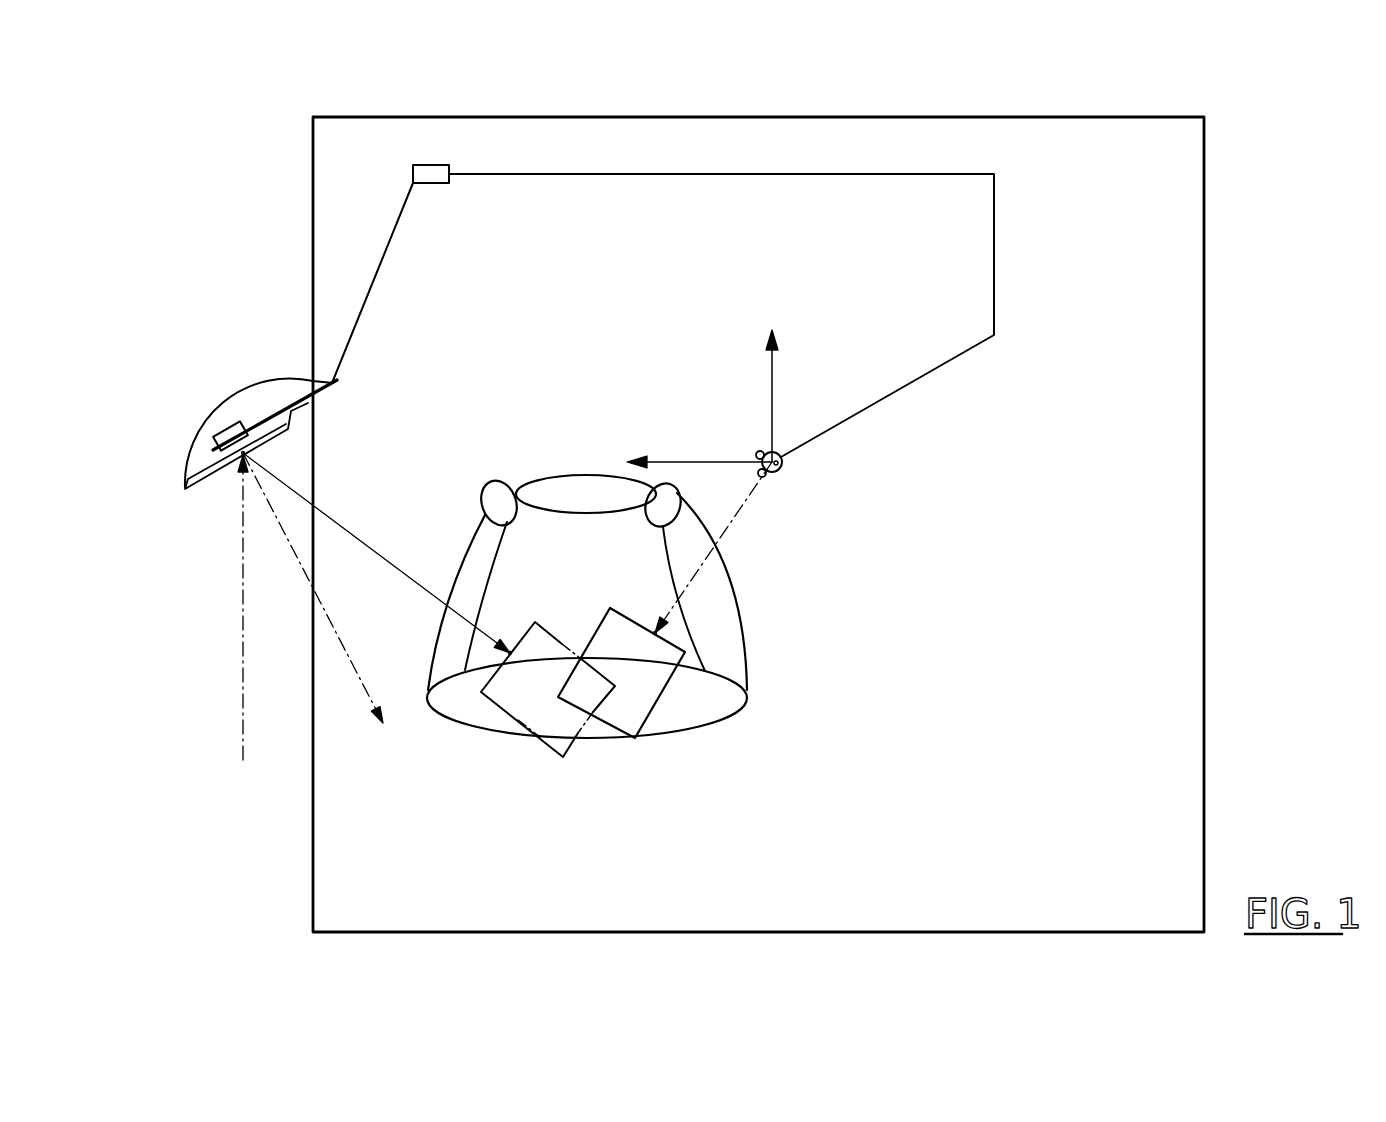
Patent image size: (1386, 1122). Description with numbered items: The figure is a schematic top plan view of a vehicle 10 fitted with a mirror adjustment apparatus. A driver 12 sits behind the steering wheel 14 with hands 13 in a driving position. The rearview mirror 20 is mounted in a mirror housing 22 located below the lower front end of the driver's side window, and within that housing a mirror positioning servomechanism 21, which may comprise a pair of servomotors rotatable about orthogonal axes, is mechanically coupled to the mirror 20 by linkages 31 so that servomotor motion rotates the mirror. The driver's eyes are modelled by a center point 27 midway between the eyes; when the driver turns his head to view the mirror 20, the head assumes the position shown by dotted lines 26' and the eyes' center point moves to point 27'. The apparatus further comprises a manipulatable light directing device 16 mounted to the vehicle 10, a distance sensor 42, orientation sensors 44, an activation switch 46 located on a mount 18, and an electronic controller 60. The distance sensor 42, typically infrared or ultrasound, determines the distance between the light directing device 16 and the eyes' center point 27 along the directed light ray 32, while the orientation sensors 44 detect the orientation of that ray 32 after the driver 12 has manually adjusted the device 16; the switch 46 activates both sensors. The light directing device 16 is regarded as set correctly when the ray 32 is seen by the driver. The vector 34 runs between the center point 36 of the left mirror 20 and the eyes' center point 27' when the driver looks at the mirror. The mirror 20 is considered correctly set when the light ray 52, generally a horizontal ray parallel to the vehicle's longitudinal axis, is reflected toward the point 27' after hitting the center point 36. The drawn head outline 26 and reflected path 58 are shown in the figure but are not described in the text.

The vehicle 10 is at (827, 117).
The electronic controller 60 is at (436, 183).
The mirror housing 22 is at (205, 428).
The rearview mirror 20 is at (188, 483).
The center point of mirror 36 is at (215, 456).
The mirror positioning servomechanism 21 is at (234, 420).
The linkages 31 is at (245, 453).
The light ray 52 is at (243, 664).
The vector 34 is at (330, 515).
The deflected beam 58 is at (286, 538).
The driver 12 is at (443, 722).
The steering wheel 14 is at (563, 514).
The hands 13 is at (496, 482).
The target plate 26 is at (629, 695).
The dotted lines 26' is at (558, 710).
The driver's eyes center point 27 is at (725, 633).
The driver's eyes center point 27' is at (517, 719).
The light directing device 16 is at (775, 472).
The distance sensor 42 is at (762, 452).
The activation switch 46 is at (758, 458).
The orientation sensors 44 is at (782, 464).
The mount 18 is at (780, 452).
The directed light ray 32 is at (730, 523).